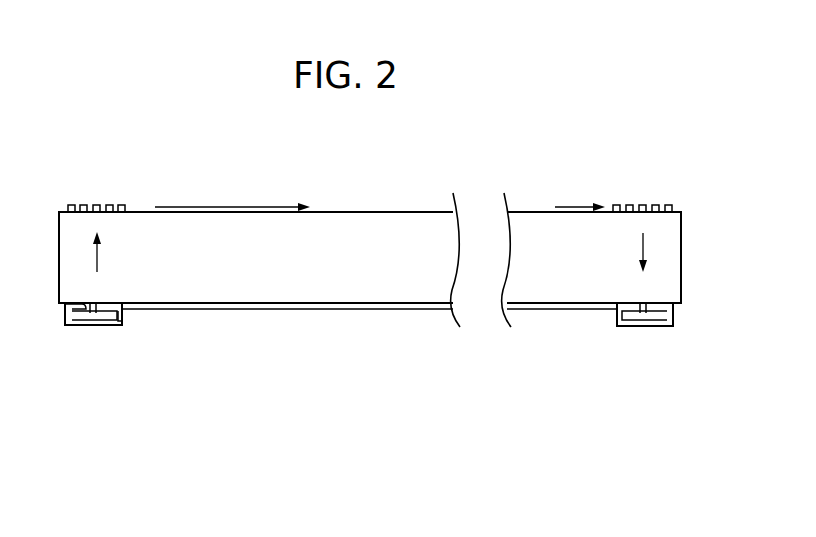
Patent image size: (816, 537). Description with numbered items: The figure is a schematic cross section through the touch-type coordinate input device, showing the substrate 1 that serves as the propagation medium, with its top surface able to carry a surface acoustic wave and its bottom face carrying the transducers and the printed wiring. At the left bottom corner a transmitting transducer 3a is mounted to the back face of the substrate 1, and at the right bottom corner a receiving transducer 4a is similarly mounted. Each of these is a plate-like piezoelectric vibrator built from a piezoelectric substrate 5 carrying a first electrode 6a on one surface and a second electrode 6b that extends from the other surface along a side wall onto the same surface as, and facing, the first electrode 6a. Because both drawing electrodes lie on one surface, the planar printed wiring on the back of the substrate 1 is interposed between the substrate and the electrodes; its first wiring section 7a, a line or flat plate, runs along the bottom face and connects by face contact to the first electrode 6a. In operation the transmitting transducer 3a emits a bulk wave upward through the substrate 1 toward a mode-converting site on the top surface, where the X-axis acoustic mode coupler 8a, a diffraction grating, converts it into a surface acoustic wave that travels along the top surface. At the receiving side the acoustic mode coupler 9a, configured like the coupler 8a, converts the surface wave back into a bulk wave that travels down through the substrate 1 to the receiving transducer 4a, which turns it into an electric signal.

The substrate 1 is at (331, 288).
The transmitting transducer 3a is at (70, 330).
The receiving transducer 4a is at (648, 331).
The piezoelectric substrate 5 is at (98, 303).
The first electrode 6a is at (120, 328).
The second electrode 6b is at (84, 302).
The first wiring section 7a is at (195, 309).
The X-axis acoustic mode coupler 8a is at (84, 186).
The X-axis acoustic mode coupler 9a is at (634, 185).